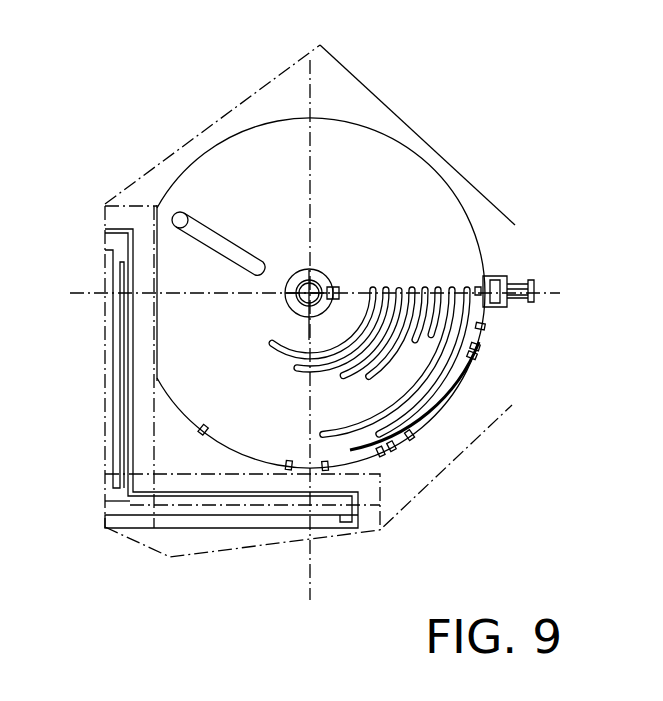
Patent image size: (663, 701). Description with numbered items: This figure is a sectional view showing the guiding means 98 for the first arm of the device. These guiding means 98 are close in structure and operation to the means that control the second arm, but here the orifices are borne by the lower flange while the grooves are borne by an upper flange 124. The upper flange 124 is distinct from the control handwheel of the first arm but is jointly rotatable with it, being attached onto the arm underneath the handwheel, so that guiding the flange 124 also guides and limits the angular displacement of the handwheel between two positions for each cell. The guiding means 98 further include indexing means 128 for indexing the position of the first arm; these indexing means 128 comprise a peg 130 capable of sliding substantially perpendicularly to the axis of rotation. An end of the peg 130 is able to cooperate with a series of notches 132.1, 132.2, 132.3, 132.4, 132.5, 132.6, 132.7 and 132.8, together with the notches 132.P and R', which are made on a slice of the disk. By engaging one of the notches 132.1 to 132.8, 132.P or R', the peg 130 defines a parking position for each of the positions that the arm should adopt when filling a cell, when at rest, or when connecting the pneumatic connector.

The guiding means 98 is at (481, 163).
The upper flange 124 is at (355, 158).
The indexing means 128 is at (551, 258).
The peg 130 is at (540, 294).
The notch R' is at (522, 239).
The notch 132.1 is at (389, 446).
The notch 132.2 is at (485, 326).
The notch 132.3 is at (479, 348).
The notch 132.4 is at (476, 357).
The notch 132.5 is at (411, 433).
The notch 132.6 is at (381, 453).
The notch 132.7 is at (288, 468).
The notch 132.8 is at (202, 431).
The notch 132.P is at (325, 468).